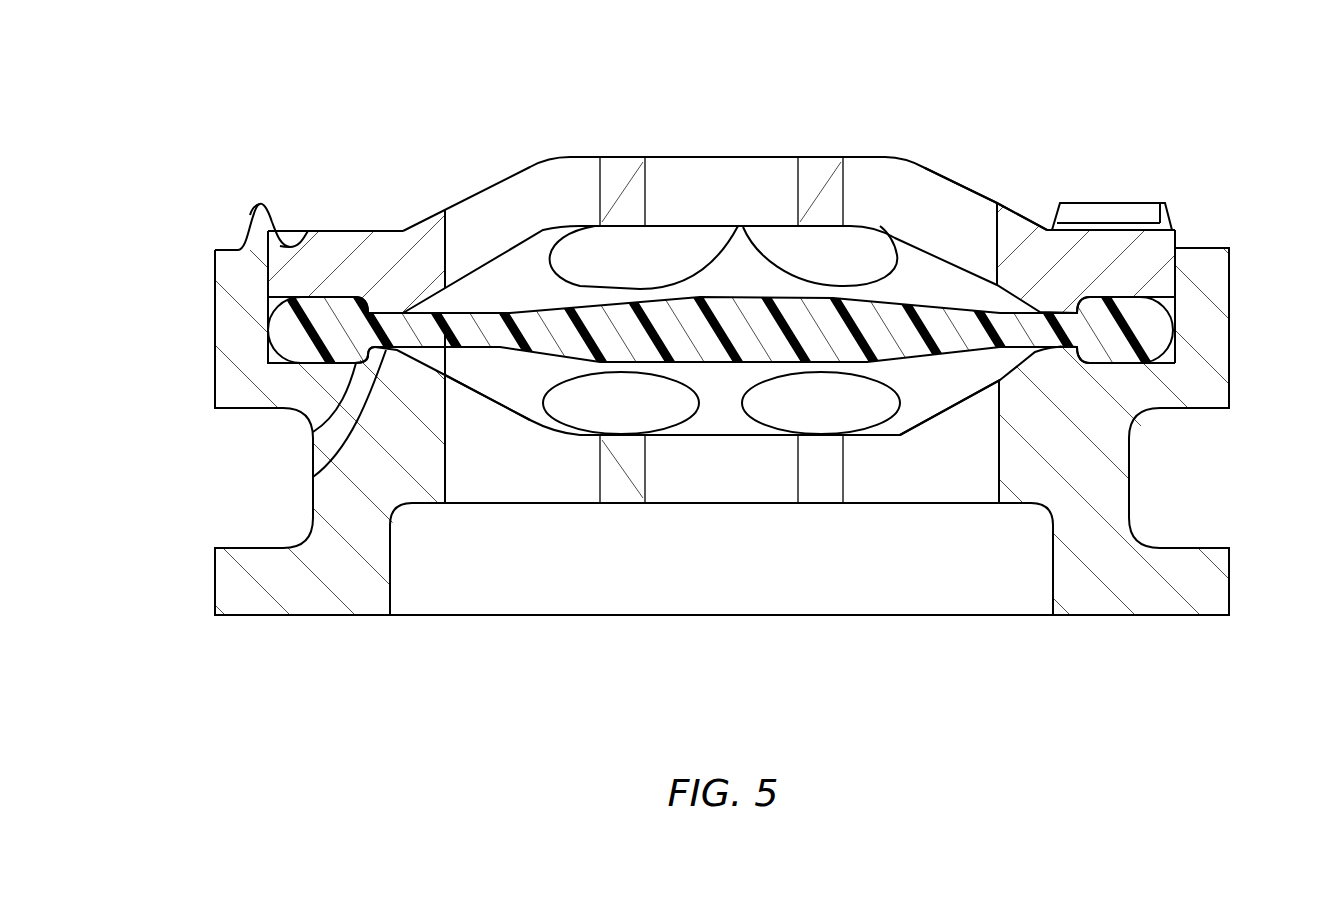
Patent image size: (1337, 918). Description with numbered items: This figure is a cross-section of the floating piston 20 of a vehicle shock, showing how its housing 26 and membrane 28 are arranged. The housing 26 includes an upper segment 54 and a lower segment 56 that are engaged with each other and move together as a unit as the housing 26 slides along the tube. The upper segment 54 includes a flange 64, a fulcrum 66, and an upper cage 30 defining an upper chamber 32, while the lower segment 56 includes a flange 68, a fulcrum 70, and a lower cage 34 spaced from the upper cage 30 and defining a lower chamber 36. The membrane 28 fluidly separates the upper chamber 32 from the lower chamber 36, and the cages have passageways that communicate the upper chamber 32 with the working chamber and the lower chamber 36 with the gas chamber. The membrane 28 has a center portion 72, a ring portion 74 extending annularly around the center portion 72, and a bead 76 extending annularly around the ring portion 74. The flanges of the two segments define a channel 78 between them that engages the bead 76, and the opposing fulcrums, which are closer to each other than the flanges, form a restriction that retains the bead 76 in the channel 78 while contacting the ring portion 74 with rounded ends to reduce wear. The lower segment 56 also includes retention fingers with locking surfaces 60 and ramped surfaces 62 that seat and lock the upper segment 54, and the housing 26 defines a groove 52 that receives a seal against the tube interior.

The floating piston 20 is at (1250, 165).
The housing 26 is at (249, 294).
The membrane 28 is at (538, 338).
The upper cage 30 is at (468, 182).
The upper chamber 32 is at (727, 257).
The lower cage 34 is at (893, 430).
The lower chamber 36 is at (720, 408).
The groove 52 is at (1200, 487).
The upper segment 54 is at (1011, 184).
The lower segment 56 is at (252, 628).
The locking surfaces 60 is at (304, 232).
The ramped surfaces 62 is at (270, 213).
The flange 64 is at (384, 230).
The fulcrum 66 is at (391, 307).
The flange 68 is at (310, 428).
The fulcrum 70 is at (312, 480).
The center portion 72 is at (700, 307).
The ring portion 74 is at (430, 333).
The bead 76 is at (1150, 337).
The channel 78 is at (268, 363).